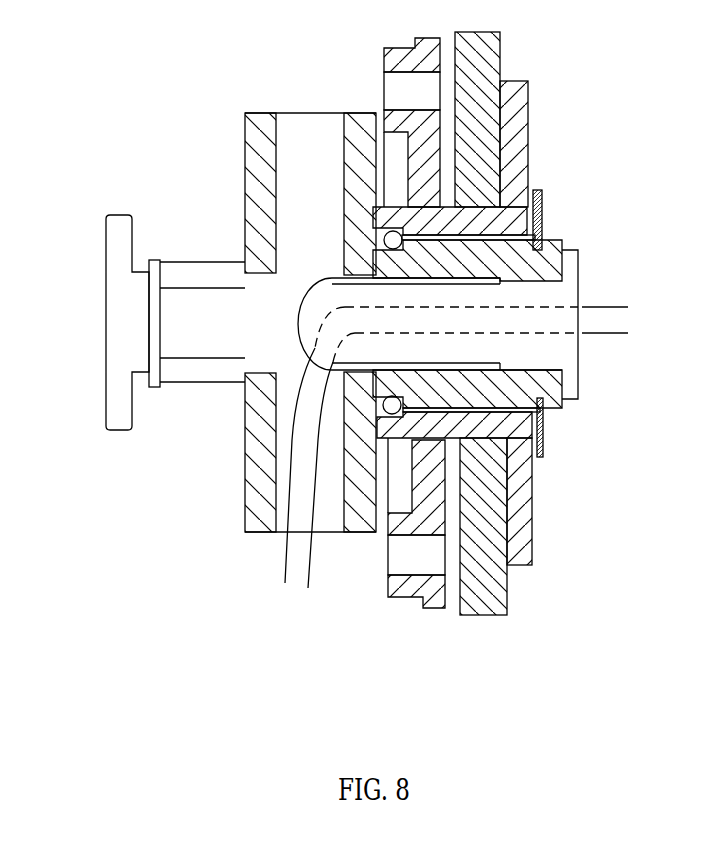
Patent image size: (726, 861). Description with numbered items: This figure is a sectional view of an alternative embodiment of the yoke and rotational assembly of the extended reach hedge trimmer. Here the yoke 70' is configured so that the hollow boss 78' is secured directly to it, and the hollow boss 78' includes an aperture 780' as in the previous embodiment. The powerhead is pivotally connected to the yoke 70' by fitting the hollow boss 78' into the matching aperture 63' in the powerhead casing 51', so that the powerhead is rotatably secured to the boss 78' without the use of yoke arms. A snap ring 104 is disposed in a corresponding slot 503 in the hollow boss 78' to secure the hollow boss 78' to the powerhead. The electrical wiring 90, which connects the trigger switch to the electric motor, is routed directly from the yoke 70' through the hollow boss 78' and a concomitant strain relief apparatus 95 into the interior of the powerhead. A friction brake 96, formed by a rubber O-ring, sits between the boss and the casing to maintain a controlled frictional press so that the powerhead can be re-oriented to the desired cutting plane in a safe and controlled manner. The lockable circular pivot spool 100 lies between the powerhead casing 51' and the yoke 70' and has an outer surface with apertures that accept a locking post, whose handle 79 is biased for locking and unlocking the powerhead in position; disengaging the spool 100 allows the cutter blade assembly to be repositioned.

The powerhead casing 51' is at (525, 311).
The circular pivot spool 100 is at (520, 143).
The hollow boss 78' is at (499, 234).
The strain relief apparatus 95 is at (530, 295).
The electrical wiring 90 is at (608, 318).
The aperture 780' is at (512, 384).
The slot 503 is at (543, 412).
The snap ring 104 is at (547, 450).
The matching aperture 63' is at (490, 510).
The friction brake 96 is at (388, 412).
The yoke 70' is at (281, 337).
The handle 79 is at (115, 397).